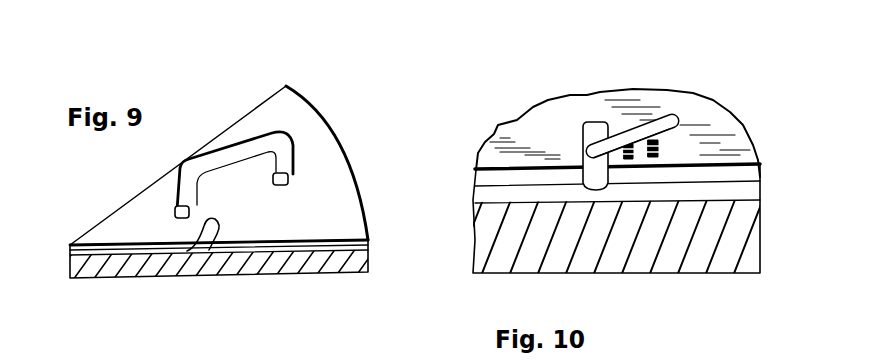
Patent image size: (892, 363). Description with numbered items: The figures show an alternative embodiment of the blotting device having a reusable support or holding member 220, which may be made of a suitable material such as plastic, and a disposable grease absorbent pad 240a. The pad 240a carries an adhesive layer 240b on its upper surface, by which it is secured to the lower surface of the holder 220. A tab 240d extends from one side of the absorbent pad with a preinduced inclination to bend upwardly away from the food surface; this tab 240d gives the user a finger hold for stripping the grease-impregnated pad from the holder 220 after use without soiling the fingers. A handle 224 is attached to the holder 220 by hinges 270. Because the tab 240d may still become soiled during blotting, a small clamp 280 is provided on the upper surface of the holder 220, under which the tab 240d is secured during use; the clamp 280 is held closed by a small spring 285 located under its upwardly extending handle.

In FIG. 9, the holding member 220 is at (322, 147).
In FIG. 10, the holding member 220 is at (552, 110).
In FIG. 9, the handle 224 is at (257, 147).
In FIG. 9, the hinges 270 is at (174, 213).
In FIG. 9, the absorbent pad 240a is at (115, 278).
In FIG. 10, the absorbent pad 240a is at (728, 256).
In FIG. 9, the adhesive layer 240b is at (70, 247).
In FIG. 10, the adhesive layer 240b is at (762, 184).
In FIG. 9, the tab 240d is at (212, 230).
In FIG. 10, the tab 240d is at (595, 124).
In FIG. 10, the clamp 280 is at (662, 118).
In FIG. 10, the spring 285 is at (697, 142).